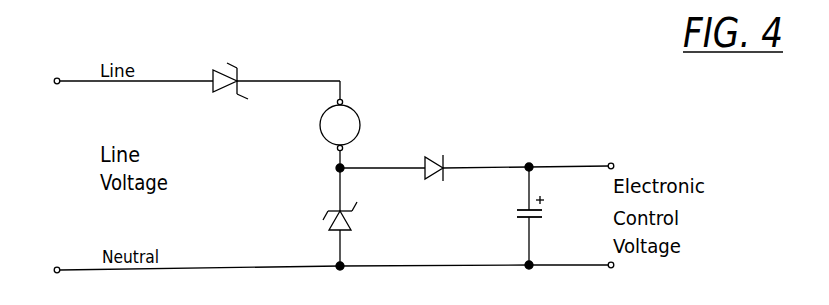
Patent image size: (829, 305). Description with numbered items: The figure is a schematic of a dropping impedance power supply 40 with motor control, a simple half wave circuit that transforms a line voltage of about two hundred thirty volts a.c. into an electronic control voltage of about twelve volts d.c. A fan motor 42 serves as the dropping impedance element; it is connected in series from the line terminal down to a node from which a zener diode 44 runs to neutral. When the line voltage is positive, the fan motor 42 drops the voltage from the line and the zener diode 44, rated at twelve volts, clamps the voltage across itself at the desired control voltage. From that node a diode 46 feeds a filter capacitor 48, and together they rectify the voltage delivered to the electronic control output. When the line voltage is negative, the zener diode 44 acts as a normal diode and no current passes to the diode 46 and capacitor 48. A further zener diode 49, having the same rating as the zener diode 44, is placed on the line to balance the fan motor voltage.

The dropping impedance power supply 40 is at (496, 99).
The fan motor 42 is at (355, 110).
The zener diode 44 is at (348, 220).
The diode 46 is at (432, 180).
The filter capacitor 48 is at (537, 218).
The zener diode 49 is at (212, 77).